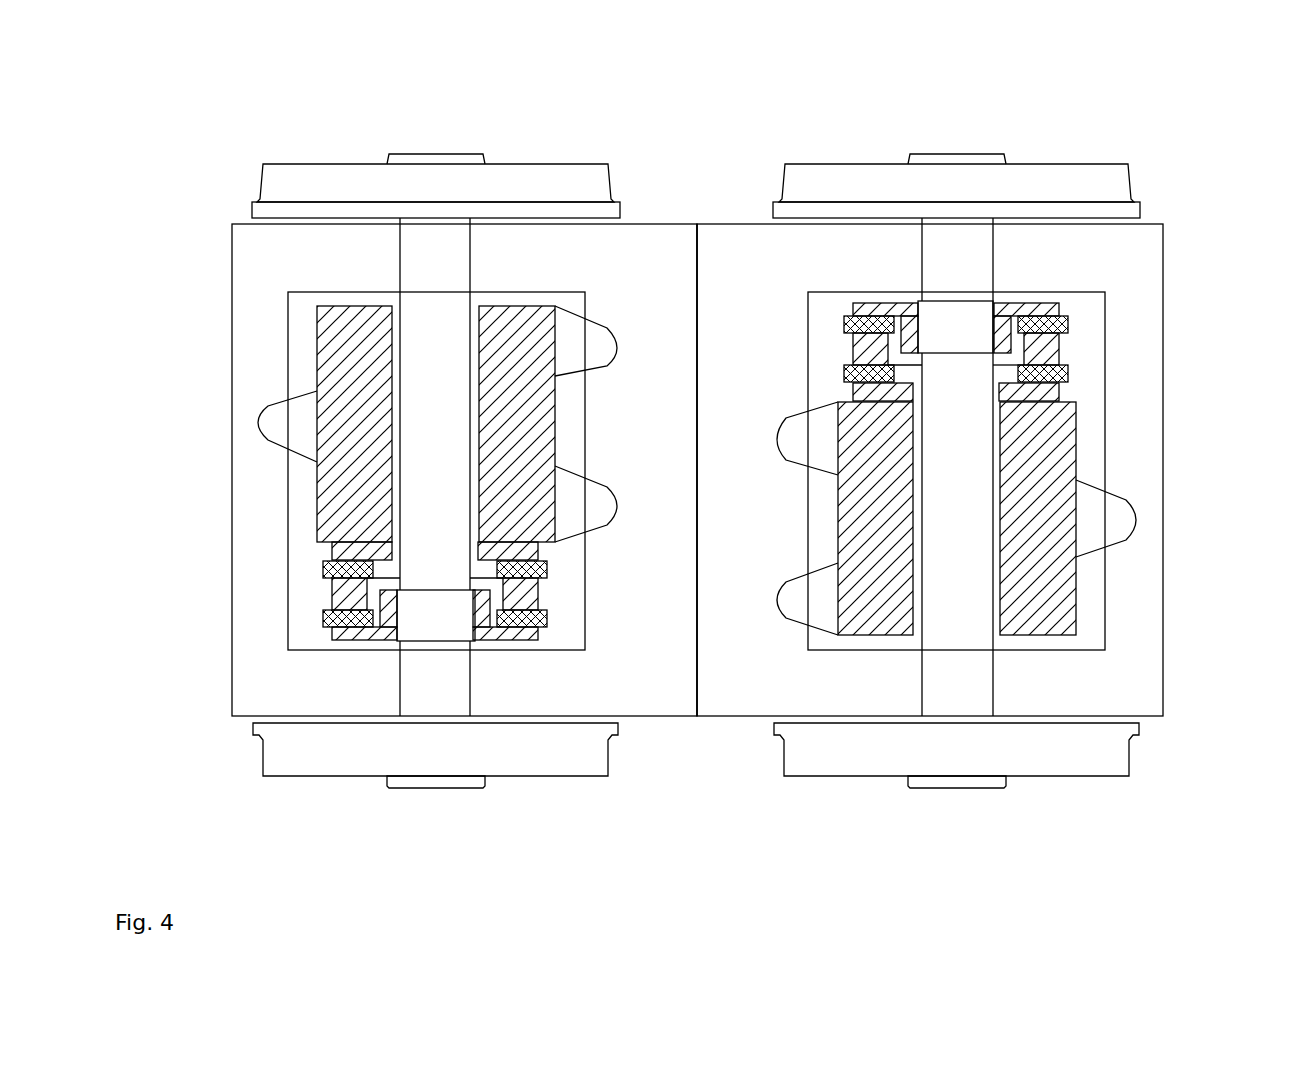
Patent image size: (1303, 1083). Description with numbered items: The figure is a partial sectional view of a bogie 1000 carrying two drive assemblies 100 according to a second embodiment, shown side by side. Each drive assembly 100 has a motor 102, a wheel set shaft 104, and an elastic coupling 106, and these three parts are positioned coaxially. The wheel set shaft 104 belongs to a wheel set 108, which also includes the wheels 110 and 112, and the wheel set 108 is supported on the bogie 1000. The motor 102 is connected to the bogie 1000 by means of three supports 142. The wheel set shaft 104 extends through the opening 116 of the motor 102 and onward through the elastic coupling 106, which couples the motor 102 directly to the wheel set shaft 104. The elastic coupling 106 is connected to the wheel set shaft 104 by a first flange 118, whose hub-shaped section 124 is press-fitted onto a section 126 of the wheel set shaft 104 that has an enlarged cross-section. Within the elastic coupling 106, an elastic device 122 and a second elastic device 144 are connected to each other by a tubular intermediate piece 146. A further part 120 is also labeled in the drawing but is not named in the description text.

The bogie 1000 is at (752, 121).
The drive assembly 100 is at (219, 176).
The motor 102 is at (300, 508).
The wheel set shaft 104 is at (408, 269).
The elastic coupling 106 is at (258, 608).
The wheel set 108 is at (460, 139).
The wheel 110 is at (569, 195).
The wheel 112 is at (313, 775).
The opening 116 is at (388, 436).
The first flange 118 is at (343, 638).
The spacer 120 is at (340, 548).
The elastic device 122 is at (335, 574).
The hub-shaped section 124 is at (383, 641).
The section of the wheel set shaft 126 is at (462, 641).
The support 142 is at (272, 415).
The second elastic device 144 is at (343, 617).
The tubular intermediate piece 146 is at (343, 595).